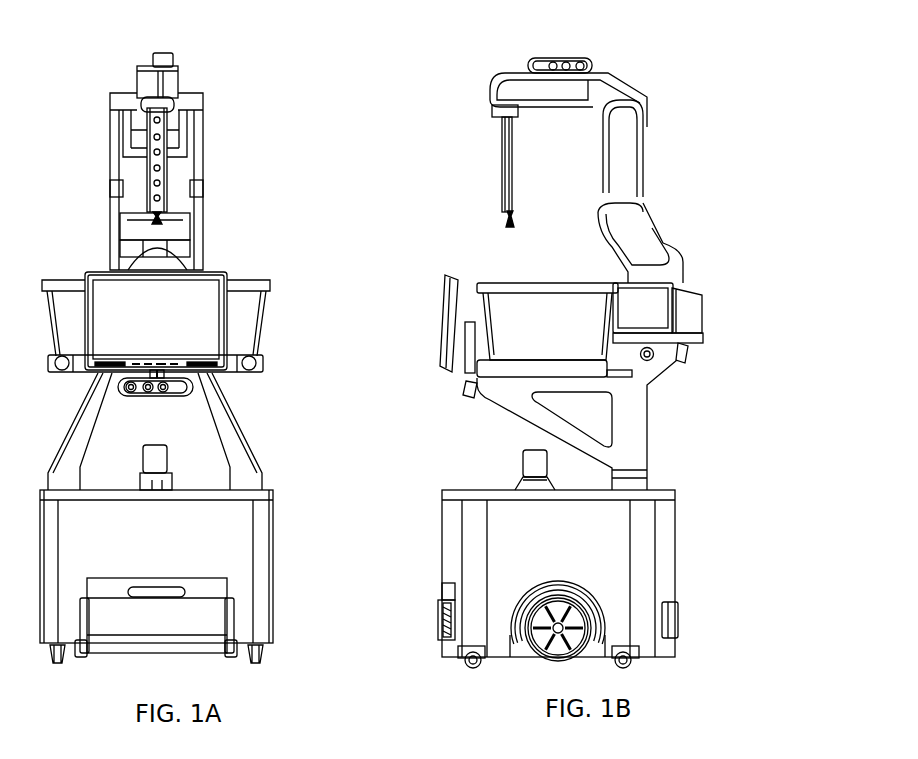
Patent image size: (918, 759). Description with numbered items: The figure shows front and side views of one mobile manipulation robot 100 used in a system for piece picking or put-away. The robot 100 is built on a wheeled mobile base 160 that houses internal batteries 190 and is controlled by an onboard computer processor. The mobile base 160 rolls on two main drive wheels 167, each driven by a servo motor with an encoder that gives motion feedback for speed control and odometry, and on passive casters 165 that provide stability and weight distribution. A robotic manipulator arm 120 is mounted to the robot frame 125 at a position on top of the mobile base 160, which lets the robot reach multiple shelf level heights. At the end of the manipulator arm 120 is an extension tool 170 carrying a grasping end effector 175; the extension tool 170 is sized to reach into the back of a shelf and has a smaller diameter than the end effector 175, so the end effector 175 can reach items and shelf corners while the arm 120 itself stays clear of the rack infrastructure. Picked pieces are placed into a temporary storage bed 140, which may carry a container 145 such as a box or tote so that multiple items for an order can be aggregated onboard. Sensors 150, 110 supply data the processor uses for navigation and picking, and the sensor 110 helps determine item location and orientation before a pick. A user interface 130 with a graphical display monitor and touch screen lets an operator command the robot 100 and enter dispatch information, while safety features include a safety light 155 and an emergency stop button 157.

In FIG. 1B, the mobile manipulation robot 100 is at (693, 81).
In FIG. 1A, the sensor 110 is at (190, 58).
In FIG. 1B, the sensor 110 is at (525, 62).
In FIG. 1A, the robotic manipulator arm 120 is at (205, 240).
In FIG. 1B, the robotic manipulator arm 120 is at (603, 243).
In FIG. 1B, the robot frame 125 is at (663, 337).
In FIG. 1A, the user interface 130 is at (183, 332).
In FIG. 1B, the user interface 130 is at (443, 331).
In FIG. 1A, the temporary storage bed 140 is at (265, 365).
In FIG. 1B, the temporary storage bed 140 is at (540, 368).
In FIG. 1A, the container 145 is at (72, 312).
In FIG. 1B, the container 145 is at (557, 315).
In FIG. 1A, the sensor 150 is at (195, 390).
In FIG. 1B, the sensor 150 is at (387, 432).
In FIG. 1A, the safety light 155 is at (173, 462).
In FIG. 1B, the safety light 155 is at (515, 465).
In FIG. 1A, the emergency stop button 157 is at (61, 368).
In FIG. 1B, the emergency stop button 157 is at (650, 358).
In FIG. 1A, the wheeled mobile base 160 is at (282, 543).
In FIG. 1B, the wheeled mobile base 160 is at (437, 540).
In FIG. 1A, the casters 165 is at (267, 658).
In FIG. 1B, the casters 165 is at (457, 662).
In FIG. 1B, the drive wheel 167 is at (575, 618).
In FIG. 1A, the extension tool 170 is at (175, 168).
In FIG. 1B, the extension tool 170 is at (502, 160).
In FIG. 1A, the end effector 175 is at (167, 210).
In FIG. 1B, the end effector 175 is at (503, 218).
In FIG. 1A, the internal batteries 190 is at (163, 618).
In FIG. 1B, the internal batteries 190 is at (440, 614).